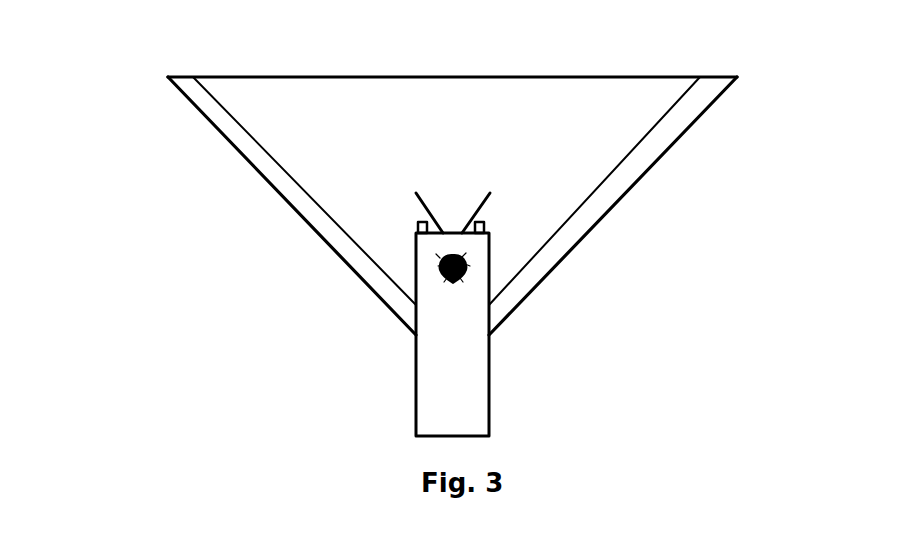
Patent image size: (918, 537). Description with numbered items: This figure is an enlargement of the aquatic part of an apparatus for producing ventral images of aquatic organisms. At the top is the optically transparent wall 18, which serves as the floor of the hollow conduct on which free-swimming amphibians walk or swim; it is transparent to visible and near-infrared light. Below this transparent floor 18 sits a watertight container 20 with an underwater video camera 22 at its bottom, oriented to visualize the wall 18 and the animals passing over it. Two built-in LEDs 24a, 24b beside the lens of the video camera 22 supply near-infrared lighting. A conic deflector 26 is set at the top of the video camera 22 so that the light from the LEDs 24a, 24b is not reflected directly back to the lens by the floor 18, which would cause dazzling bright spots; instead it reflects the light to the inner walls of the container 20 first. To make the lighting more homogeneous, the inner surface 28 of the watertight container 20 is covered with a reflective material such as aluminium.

The optically transparent wall 18 is at (443, 77).
The watertight container 20 is at (176, 192).
The underwater video camera 22 is at (490, 397).
The built-in LED 24a is at (418, 222).
The built-in LED 24b is at (487, 222).
The conic deflector 26 is at (455, 191).
The inner surface 28 is at (245, 128).